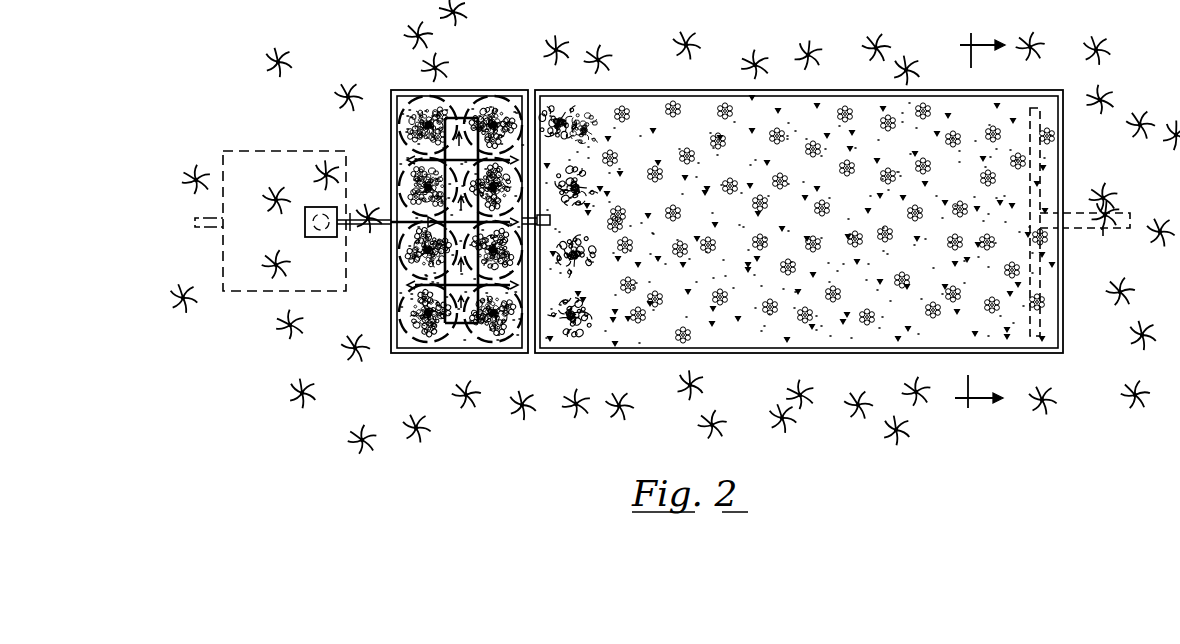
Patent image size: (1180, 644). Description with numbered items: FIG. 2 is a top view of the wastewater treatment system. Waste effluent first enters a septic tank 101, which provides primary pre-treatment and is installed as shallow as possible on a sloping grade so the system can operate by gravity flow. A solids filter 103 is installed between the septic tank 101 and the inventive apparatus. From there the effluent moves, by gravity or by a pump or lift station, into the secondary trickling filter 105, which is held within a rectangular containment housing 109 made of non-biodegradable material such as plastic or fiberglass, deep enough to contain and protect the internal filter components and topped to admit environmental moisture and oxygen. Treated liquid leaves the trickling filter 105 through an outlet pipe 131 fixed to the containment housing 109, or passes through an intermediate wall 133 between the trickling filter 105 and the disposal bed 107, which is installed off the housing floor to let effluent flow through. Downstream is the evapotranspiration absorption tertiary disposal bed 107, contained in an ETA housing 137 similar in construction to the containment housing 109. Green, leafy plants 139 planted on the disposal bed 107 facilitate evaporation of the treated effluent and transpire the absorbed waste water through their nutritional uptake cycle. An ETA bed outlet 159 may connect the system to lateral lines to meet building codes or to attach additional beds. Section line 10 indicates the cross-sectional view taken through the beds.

The section line 10- 10 is at (976, 220).
The septic tank 101 is at (257, 140).
The solids filter 103 is at (311, 209).
The secondary trickling filter 105 is at (472, 112).
The ETA disposal bed 107 is at (875, 137).
The containment housing 109 is at (455, 353).
The outlet pipe 131 is at (547, 214).
The intermediate wall 133 is at (546, 105).
The ETA housing 137 is at (1045, 90).
The green, leafy plants 139 is at (800, 320).
The ETA bed outlet 159 is at (1108, 240).